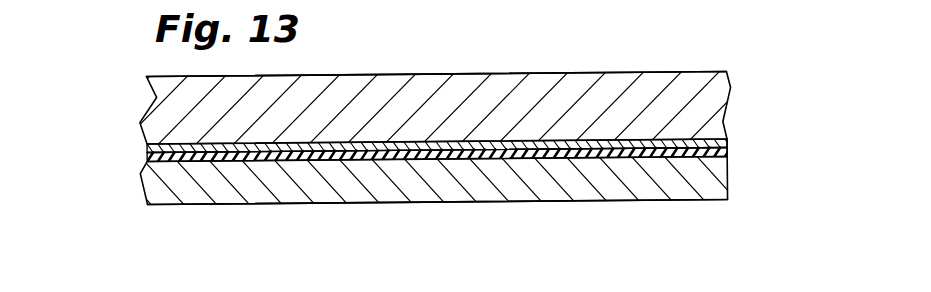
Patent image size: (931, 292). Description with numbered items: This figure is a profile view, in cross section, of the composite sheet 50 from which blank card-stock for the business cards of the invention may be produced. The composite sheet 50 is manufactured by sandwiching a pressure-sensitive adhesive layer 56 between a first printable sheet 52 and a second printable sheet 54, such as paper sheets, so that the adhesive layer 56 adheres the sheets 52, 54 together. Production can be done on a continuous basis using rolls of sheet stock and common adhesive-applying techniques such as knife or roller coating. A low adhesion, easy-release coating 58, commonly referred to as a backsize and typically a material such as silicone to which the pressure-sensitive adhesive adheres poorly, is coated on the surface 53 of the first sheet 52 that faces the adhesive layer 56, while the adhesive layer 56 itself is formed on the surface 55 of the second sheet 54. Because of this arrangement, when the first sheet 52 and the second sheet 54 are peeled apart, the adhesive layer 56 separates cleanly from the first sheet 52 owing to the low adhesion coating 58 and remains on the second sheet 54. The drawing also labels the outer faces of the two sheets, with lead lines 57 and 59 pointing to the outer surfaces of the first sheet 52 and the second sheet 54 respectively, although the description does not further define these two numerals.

The composite sheet 50 is at (129, 234).
The first printable sheet 52 is at (166, 99).
The surface of the first sheet 53 is at (710, 158).
The second printable sheet 54 is at (219, 189).
The surface of the second sheet 55 is at (472, 143).
The pressure-sensitive adhesive layer 56 is at (147, 160).
The outer surface of first layer 57 is at (695, 74).
The low adhesion, easy-release coating 58 is at (147, 143).
The outer surface of second layer 59 is at (663, 204).